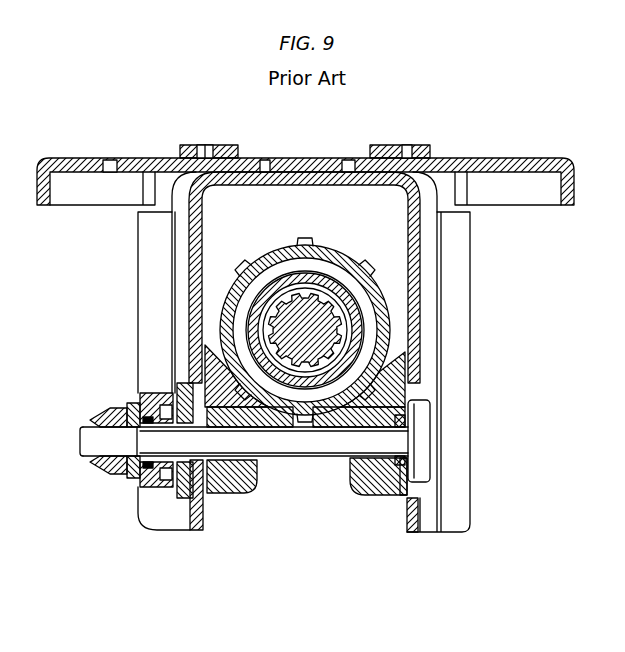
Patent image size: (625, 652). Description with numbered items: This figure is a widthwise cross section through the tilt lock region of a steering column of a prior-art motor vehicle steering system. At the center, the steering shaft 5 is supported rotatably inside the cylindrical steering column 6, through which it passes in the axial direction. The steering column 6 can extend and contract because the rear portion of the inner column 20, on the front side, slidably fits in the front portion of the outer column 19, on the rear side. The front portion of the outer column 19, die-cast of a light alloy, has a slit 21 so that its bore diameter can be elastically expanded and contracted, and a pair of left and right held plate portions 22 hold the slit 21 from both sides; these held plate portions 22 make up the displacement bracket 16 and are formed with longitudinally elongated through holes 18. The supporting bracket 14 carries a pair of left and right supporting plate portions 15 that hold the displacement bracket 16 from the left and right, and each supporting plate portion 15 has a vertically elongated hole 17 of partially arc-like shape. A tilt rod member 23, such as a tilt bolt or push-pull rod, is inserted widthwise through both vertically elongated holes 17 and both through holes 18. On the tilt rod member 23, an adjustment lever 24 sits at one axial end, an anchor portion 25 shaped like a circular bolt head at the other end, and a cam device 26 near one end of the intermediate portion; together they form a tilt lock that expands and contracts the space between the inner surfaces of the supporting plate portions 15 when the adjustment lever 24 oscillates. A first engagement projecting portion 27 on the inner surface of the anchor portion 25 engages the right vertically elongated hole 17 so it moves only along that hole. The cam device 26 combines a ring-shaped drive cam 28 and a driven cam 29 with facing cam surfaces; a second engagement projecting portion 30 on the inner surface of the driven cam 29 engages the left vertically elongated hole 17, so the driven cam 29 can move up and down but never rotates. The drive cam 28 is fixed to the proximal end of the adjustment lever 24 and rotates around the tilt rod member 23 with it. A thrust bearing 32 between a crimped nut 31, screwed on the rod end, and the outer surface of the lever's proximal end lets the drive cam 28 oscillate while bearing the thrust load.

The steering shaft 5 is at (247, 263).
The steering column 6 is at (328, 265).
The supporting bracket 14 is at (310, 157).
The supporting plate portions 15 is at (193, 242).
The displacement bracket 16 is at (222, 493).
The vertically elongated holes 17 is at (197, 531).
The through holes 18 is at (175, 494).
The outer column 19 is at (380, 287).
The inner column 20 is at (362, 322).
The slit 21 is at (303, 440).
The held plate portions 22 is at (243, 483).
The tilt rod member 23 is at (363, 395).
The adjustment lever 24 is at (137, 388).
The anchor portion 25 is at (430, 436).
The cam device 26 is at (140, 484).
The first engagement projecting portion 27 is at (398, 470).
The drive cam 28 is at (152, 393).
The driven cam 29 is at (184, 393).
The second engagement projecting portion 30 is at (247, 480).
The nut 31 is at (118, 413).
The thrust bearing 32 is at (120, 466).